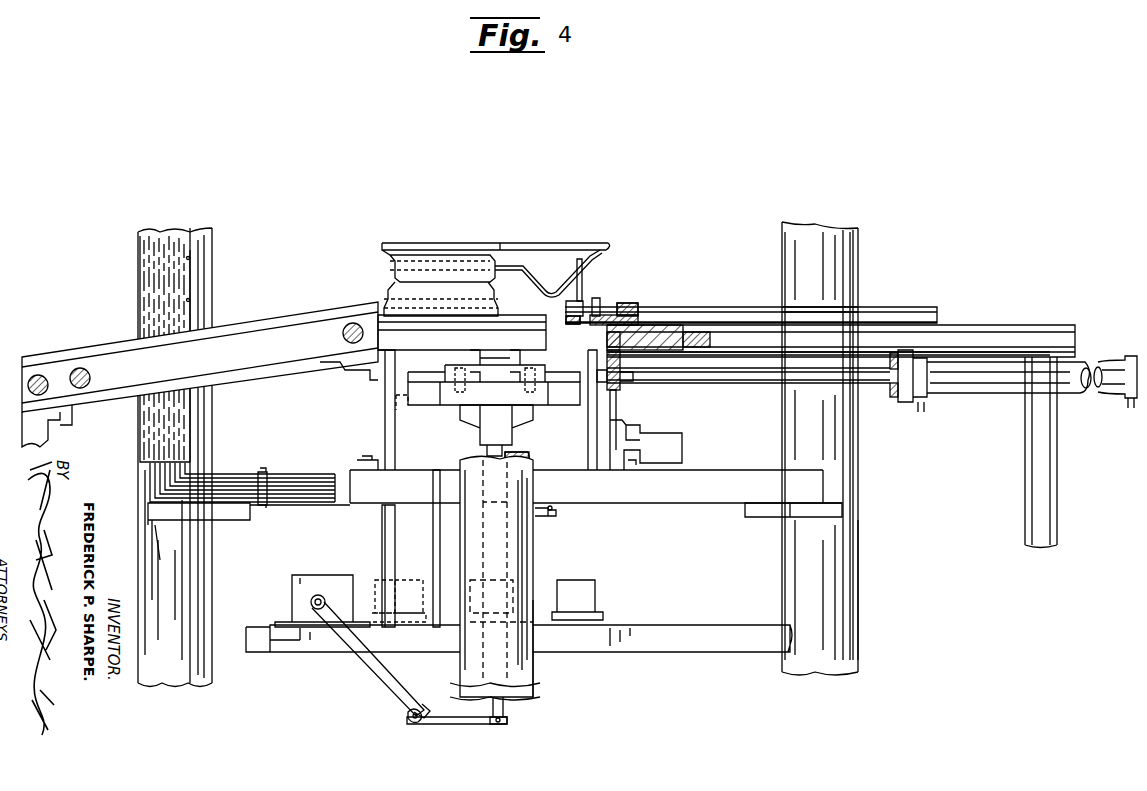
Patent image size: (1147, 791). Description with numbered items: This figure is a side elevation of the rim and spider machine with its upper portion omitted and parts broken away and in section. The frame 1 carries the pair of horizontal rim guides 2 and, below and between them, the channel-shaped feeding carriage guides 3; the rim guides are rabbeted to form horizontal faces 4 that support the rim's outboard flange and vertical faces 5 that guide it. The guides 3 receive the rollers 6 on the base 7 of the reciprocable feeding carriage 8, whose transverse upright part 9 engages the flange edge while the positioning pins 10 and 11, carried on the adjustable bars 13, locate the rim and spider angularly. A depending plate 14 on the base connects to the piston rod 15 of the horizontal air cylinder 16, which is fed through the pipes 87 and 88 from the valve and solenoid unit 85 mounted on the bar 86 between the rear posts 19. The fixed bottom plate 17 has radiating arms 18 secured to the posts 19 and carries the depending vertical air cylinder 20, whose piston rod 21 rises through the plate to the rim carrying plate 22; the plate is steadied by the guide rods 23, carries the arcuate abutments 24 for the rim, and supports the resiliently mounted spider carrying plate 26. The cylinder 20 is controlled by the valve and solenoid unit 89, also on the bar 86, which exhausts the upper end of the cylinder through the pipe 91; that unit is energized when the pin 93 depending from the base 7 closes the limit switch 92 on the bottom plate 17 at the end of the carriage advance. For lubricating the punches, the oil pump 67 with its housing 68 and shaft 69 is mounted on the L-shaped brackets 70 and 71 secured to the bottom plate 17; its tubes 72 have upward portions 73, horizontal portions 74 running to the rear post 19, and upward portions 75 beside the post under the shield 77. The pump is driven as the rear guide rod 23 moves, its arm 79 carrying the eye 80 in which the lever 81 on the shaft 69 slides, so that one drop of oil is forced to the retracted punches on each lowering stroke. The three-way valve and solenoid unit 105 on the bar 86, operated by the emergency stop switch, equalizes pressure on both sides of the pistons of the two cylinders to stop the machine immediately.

The frame 1 is at (893, 299).
The rim guides 2 is at (924, 310).
The feeding carriage guides 3 is at (958, 330).
The horizontal longitudinally extending faces 4 is at (770, 307).
The vertical longitudinally extending faces 5 is at (818, 308).
The rollers 6 is at (724, 340).
The base 7 is at (682, 324).
The feeding carriage 8 is at (664, 316).
The transverse upright part 9 is at (612, 304).
The positioning pin 10 is at (596, 296).
The positioning pin 11 is at (578, 262).
The bars 13 is at (565, 321).
The depending plate 14 is at (621, 364).
The piston rod 15 is at (720, 386).
The air cylinder 16 is at (1074, 397).
The bottom plate 17 is at (634, 508).
The radiating arms 18 is at (702, 500).
The upright posts 19 is at (140, 538).
The air cylinder 20 is at (548, 568).
The piston rod 21 is at (512, 452).
The rim carrying plate 22 is at (424, 404).
The guide rods 23 is at (505, 712).
The arcuate abutments 24 is at (562, 376).
The spider carrying plate 26 is at (450, 364).
The oil pump 67 is at (284, 603).
The housing 68 is at (305, 586).
The shaft 69 is at (326, 596).
The L-shaped bracket 70 is at (440, 564).
The L-shaped bracket 71 is at (392, 550).
The tube 72 is at (282, 518).
The parallel portions 73 is at (334, 532).
The parallel portions 74 is at (302, 498).
The parallel portions 75 is at (140, 277).
The shield 77 is at (146, 312).
The arm 79 is at (456, 718).
The eye 80 is at (406, 716).
The lever 81 is at (386, 676).
The valve and solenoid unit 85 is at (586, 590).
The bar 86 is at (694, 624).
The pipe 87 is at (1126, 406).
The pipe 88 is at (928, 404).
The valve and solenoid unit 89 is at (486, 585).
The pipe 91 is at (560, 512).
The limit switch 92 is at (682, 449).
The pin 93 is at (618, 402).
The valve and solenoid unit 105 is at (399, 601).